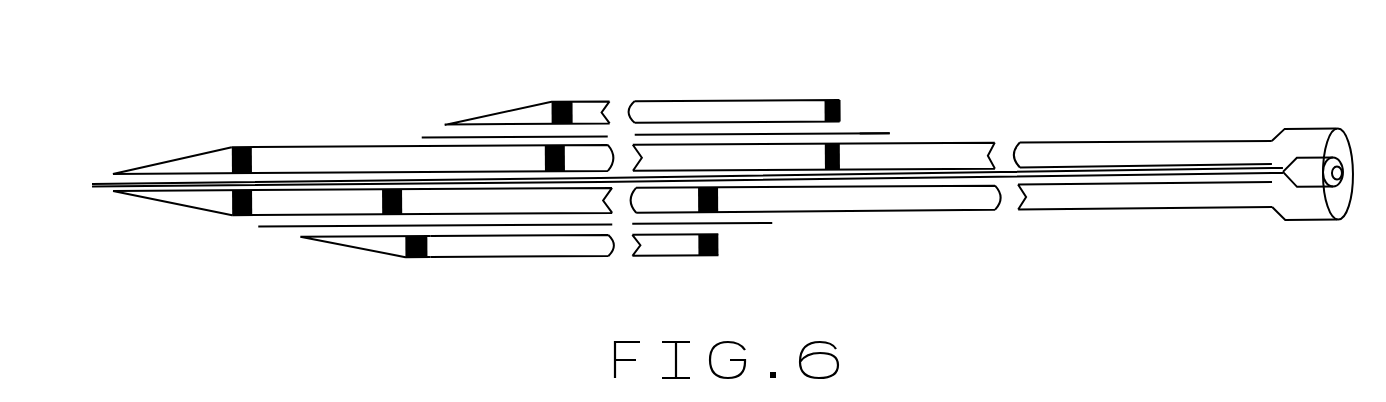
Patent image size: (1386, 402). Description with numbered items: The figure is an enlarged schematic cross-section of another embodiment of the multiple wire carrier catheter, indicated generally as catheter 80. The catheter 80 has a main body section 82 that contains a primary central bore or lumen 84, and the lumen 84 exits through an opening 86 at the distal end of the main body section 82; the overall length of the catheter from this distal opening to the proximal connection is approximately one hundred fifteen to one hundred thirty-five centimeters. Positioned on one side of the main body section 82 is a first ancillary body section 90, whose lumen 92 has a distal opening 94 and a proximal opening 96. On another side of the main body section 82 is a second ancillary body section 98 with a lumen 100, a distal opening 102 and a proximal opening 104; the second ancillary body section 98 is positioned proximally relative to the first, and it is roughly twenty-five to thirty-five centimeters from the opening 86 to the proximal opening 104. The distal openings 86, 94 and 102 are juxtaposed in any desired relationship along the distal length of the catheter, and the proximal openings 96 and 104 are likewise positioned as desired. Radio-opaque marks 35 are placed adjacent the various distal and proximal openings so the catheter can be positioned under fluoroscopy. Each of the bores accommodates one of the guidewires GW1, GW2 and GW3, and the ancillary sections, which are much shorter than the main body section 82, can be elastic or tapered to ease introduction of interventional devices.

The radio-opaque marks 35 is at (244, 148).
The catheter 80 is at (846, 87).
The main body section 82 is at (937, 142).
The primary central bore or lumen 84 is at (1180, 172).
The opening 86 is at (117, 177).
The first ancillary body section 90 is at (658, 257).
The lumen 92 is at (532, 232).
The distal opening 94 is at (310, 233).
The proximal opening 96 is at (710, 230).
The second ancillary body section 98 is at (723, 100).
The lumen 100 is at (522, 133).
The distal opening 102 is at (448, 130).
The proximal opening 104 is at (830, 127).
The guidewire GW1 is at (92, 187).
The guidewire GW2 is at (260, 230).
The guidewire GW3 is at (882, 131).